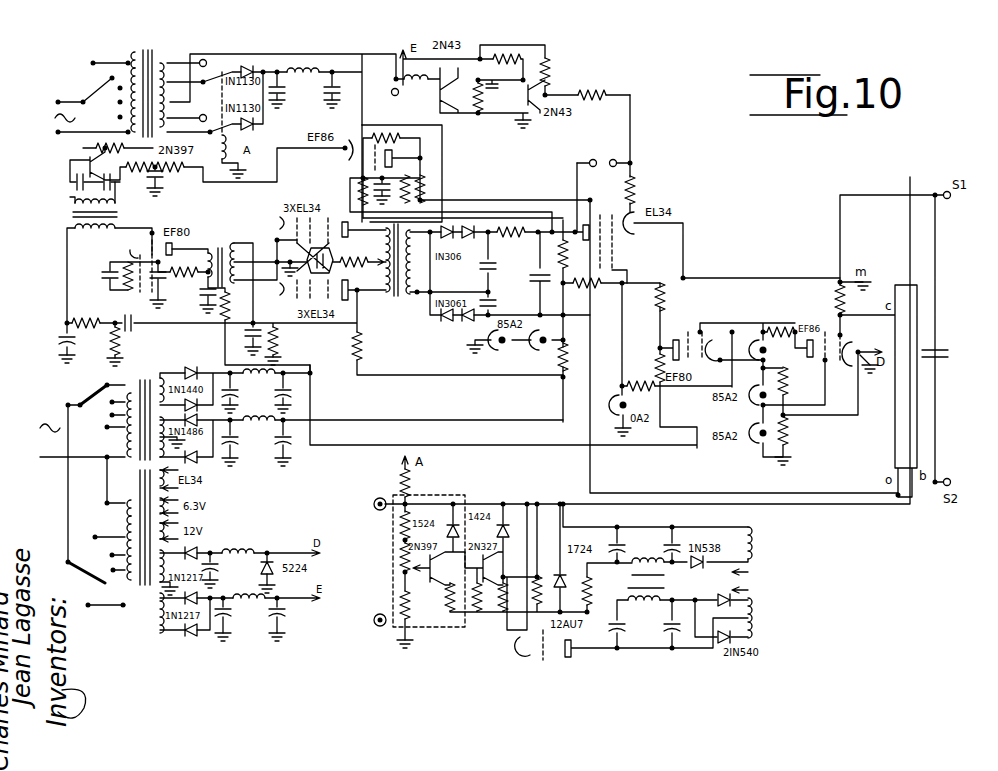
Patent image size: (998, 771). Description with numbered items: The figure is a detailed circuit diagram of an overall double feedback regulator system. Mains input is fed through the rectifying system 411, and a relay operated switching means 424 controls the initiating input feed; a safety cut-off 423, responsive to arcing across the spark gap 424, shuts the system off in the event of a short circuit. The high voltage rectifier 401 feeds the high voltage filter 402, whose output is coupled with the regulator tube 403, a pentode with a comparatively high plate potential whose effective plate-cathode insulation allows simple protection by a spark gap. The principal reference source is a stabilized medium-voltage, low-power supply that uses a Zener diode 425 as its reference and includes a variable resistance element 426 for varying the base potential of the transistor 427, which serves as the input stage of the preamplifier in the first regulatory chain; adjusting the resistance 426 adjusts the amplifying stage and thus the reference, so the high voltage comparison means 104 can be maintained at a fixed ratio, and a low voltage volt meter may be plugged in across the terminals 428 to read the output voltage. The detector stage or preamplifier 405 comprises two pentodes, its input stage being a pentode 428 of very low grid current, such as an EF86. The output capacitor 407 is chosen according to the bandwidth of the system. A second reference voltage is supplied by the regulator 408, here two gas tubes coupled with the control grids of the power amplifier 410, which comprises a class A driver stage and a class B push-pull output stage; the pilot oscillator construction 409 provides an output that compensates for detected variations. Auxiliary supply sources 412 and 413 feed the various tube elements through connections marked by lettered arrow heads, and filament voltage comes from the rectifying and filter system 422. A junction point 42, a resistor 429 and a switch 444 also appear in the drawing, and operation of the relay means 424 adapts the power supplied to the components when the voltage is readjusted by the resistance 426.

The rectifying system 411 is at (165, 55).
The relay operated switching means 424 is at (258, 125).
The connection terminal 42 is at (342, 155).
The oscillator 409 is at (137, 190).
The power amplifier 410 is at (186, 288).
The high voltage rectifier 401 is at (481, 285).
The high voltage filter 402 is at (514, 246).
The regulator tube 403 is at (626, 207).
The vacuum tube preamplifier system 405 is at (742, 337).
The output capacitor 407 is at (930, 355).
The second reference voltage system 408 is at (503, 347).
The auxiliary source of supply 412 is at (360, 363).
The auxiliary source of supply 413 is at (241, 627).
The rectifying and filter system 422 is at (255, 575).
The safety cut-off 423 is at (493, 106).
The Zener diode 425 is at (505, 504).
The variable resistance element 426 is at (408, 583).
The transistor 427 is at (445, 582).
The terminals 428 is at (380, 617).
The resistor 429 is at (687, 303).
The switch 444 is at (610, 143).
The comparative organ 104 is at (917, 320).